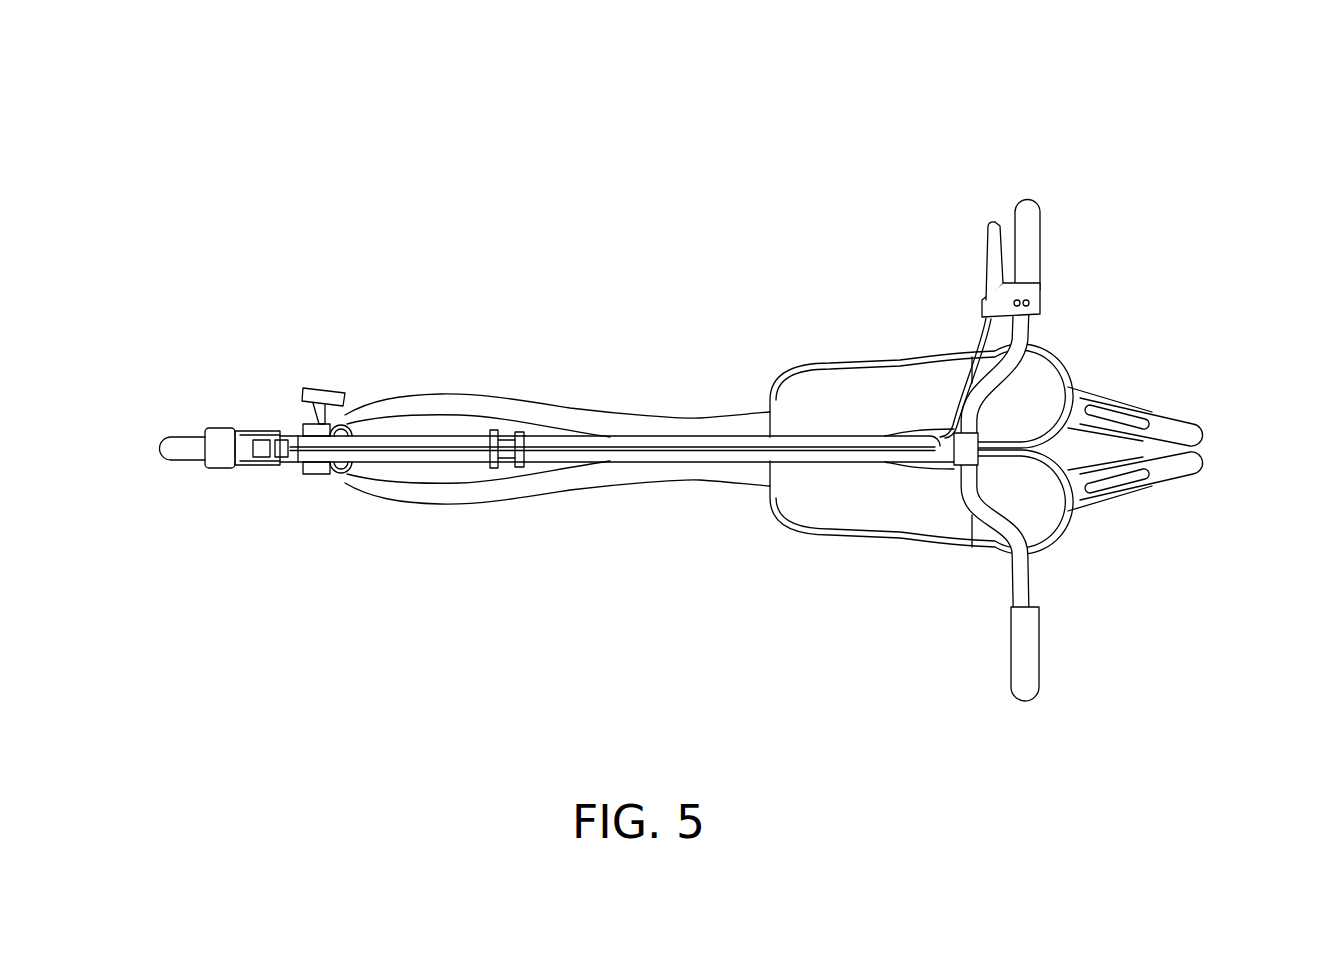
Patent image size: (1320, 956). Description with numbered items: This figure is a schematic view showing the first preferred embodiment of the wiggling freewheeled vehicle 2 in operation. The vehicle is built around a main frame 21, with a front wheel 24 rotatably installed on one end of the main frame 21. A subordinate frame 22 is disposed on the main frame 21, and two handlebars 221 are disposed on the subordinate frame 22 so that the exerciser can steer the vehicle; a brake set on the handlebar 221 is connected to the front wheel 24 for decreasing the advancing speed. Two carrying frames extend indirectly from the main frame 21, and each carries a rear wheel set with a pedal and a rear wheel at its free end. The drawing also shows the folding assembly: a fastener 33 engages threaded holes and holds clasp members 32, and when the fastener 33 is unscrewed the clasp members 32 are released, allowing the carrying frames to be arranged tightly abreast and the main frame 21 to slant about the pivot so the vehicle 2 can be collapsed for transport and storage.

The wiggling freewheeled vehicle 2 is at (155, 158).
The main frame 21 is at (423, 430).
The subordinate frame 22 is at (692, 435).
The front wheel 24 is at (176, 458).
The clasp member 32 is at (305, 472).
The fastener 33 is at (338, 381).
The handlebar 221 is at (1045, 660).